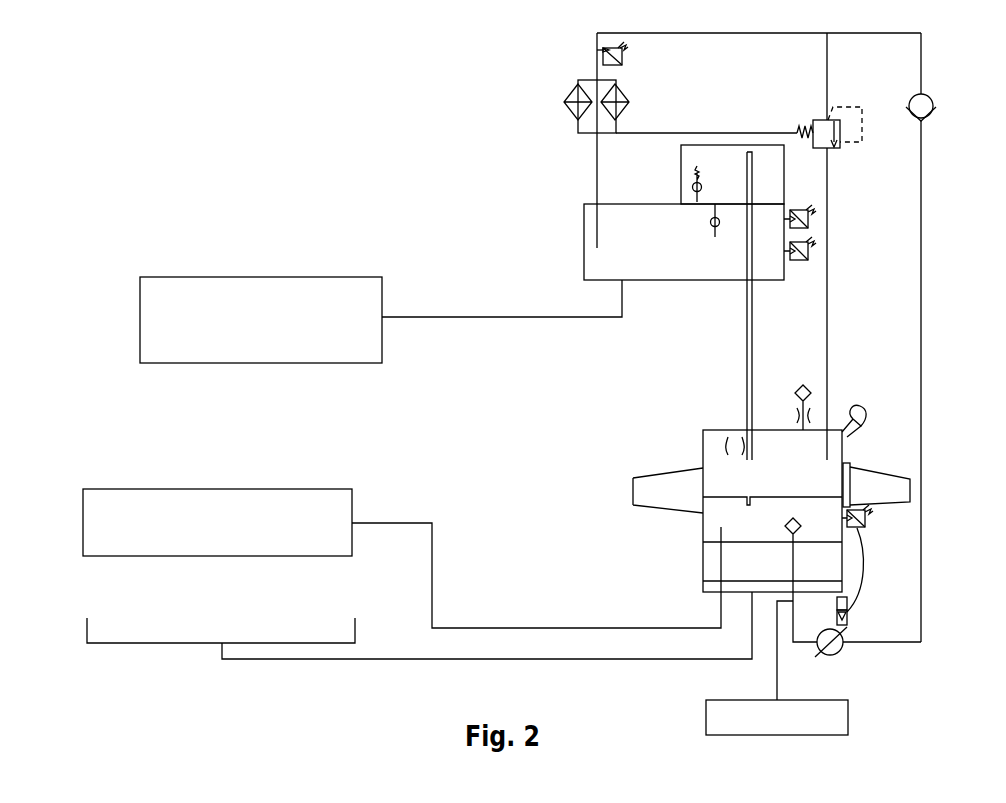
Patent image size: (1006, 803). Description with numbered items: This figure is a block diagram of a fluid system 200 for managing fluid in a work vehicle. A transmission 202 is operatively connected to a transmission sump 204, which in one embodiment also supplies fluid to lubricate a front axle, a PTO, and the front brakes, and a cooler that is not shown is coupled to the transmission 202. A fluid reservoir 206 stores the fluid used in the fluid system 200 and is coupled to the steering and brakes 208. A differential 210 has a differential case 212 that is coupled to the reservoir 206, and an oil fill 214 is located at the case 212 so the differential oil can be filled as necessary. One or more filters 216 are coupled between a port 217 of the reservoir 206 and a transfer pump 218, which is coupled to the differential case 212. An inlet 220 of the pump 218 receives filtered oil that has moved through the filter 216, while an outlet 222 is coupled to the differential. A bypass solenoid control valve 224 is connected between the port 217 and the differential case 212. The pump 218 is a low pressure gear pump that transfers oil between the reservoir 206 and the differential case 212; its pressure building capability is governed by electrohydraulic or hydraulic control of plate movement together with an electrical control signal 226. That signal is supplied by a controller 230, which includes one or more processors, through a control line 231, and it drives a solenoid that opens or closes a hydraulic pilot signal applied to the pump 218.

The fluid system 200 is at (314, 100).
The transmission 202 is at (219, 489).
The transmission sump 204 is at (128, 643).
The fluid reservoir 206 is at (605, 263).
The steering and brakes 208 is at (263, 277).
The differential 210 is at (633, 492).
The differential case 212 is at (715, 438).
The oil fill 214 is at (860, 411).
The filter 216 is at (568, 92).
The port 217 is at (597, 165).
The transfer pump 218 is at (841, 651).
The inlet 220 is at (921, 618).
The outlet 222 is at (800, 649).
The bypass solenoid control valve 224 is at (838, 152).
The electrical control signal 226 is at (850, 615).
The controller 230 is at (848, 718).
The control line 231 is at (777, 673).